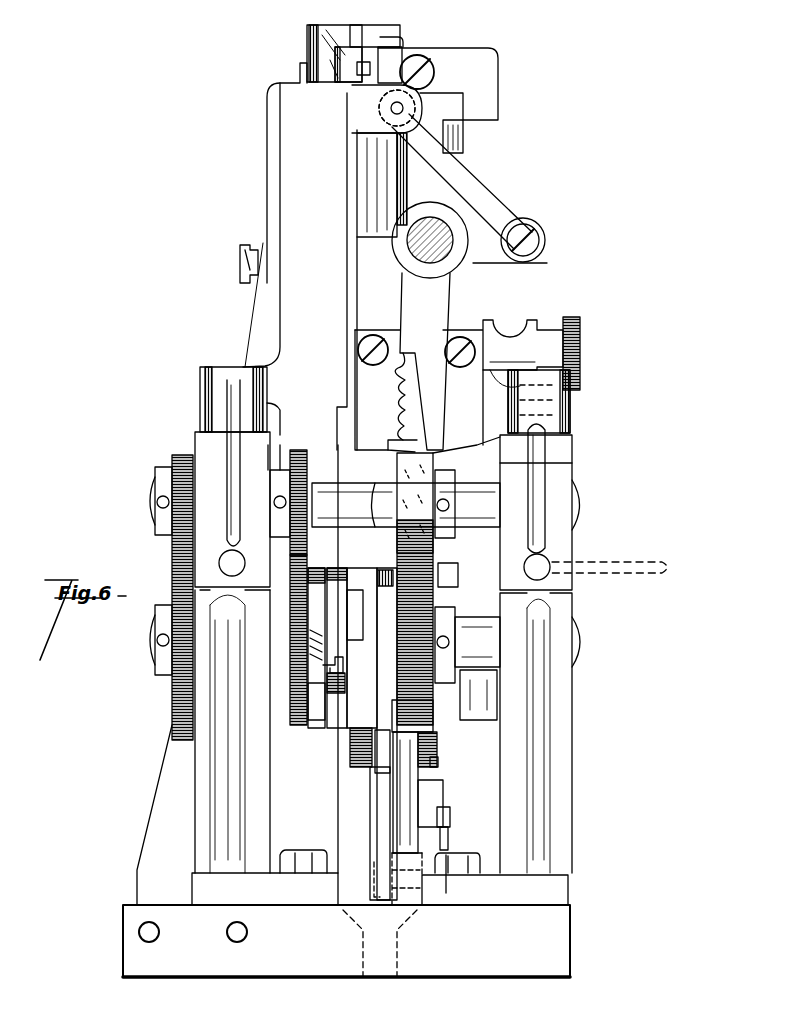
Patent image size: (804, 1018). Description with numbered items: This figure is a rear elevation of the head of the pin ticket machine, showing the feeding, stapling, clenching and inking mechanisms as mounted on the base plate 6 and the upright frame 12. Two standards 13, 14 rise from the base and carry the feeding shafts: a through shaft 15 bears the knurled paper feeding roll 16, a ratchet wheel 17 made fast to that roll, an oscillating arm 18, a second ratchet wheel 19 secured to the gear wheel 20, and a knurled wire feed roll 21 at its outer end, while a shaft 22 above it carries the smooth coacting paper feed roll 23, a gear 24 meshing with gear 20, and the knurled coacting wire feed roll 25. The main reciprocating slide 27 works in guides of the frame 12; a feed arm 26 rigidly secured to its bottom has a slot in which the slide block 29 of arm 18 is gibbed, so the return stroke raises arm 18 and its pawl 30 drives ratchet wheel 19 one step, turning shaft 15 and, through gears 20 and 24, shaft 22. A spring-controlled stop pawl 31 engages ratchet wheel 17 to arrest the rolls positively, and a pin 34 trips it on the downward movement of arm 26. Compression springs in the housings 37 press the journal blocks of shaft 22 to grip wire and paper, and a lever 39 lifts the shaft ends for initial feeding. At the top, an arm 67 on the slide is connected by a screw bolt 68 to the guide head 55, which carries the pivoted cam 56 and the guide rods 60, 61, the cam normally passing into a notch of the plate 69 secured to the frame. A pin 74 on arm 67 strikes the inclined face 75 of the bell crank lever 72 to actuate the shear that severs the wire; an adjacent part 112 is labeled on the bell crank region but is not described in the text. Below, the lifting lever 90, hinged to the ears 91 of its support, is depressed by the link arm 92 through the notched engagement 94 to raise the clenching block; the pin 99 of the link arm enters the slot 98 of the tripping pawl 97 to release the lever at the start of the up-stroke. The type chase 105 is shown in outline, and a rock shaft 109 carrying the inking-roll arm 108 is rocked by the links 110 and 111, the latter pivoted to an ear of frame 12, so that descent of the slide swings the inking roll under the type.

The base plate 6 is at (553, 940).
The upright frame 12 is at (298, 256).
The standard 13 is at (205, 750).
The standard 14 is at (560, 730).
The through shaft 15 is at (587, 645).
The paper feeding roll 16 is at (440, 562).
The ratchet wheel 17 is at (388, 575).
The oscillating arm 18 is at (338, 660).
The ratchet wheel 19 is at (320, 703).
The gear wheel 20 is at (294, 654).
The wire feed roll 21 is at (175, 705).
The shaft 22 is at (587, 510).
The coacting paper feed roll 23 is at (440, 463).
The gear 24 is at (298, 450).
The coacting wire feed roll 25 is at (152, 537).
The feed arm 26 is at (358, 767).
The slide 27 is at (330, 57).
The slide block 29 is at (353, 605).
The pawl 30 is at (300, 588).
The pawl 31 is at (378, 848).
The pin 34 is at (373, 770).
The housing 37 is at (266, 396).
The lever 39 is at (247, 503).
The guide head 55 is at (490, 90).
The cam 56 is at (398, 40).
The guide rod 60 is at (464, 150).
The guide rod 61 is at (406, 183).
The arm 67 is at (402, 58).
The screw bolt 68 is at (436, 70).
The plate 69 is at (368, 32).
The bell crank lever 72 is at (365, 172).
The pin 74 is at (360, 70).
The inclined face 75 is at (383, 103).
The lifting lever 90 is at (410, 804).
The ears 91 is at (427, 822).
The link arm 92 is at (425, 737).
The notched engagement 94 is at (438, 762).
The tripping pawl 97 is at (457, 880).
The slot 98 is at (452, 838).
The pin 99 is at (438, 768).
The type chase 105 is at (545, 362).
The arm 108 is at (437, 303).
The rock shaft 109 is at (418, 252).
The link 110 is at (503, 262).
The link 111 is at (497, 198).
The hub 112 is at (375, 120).